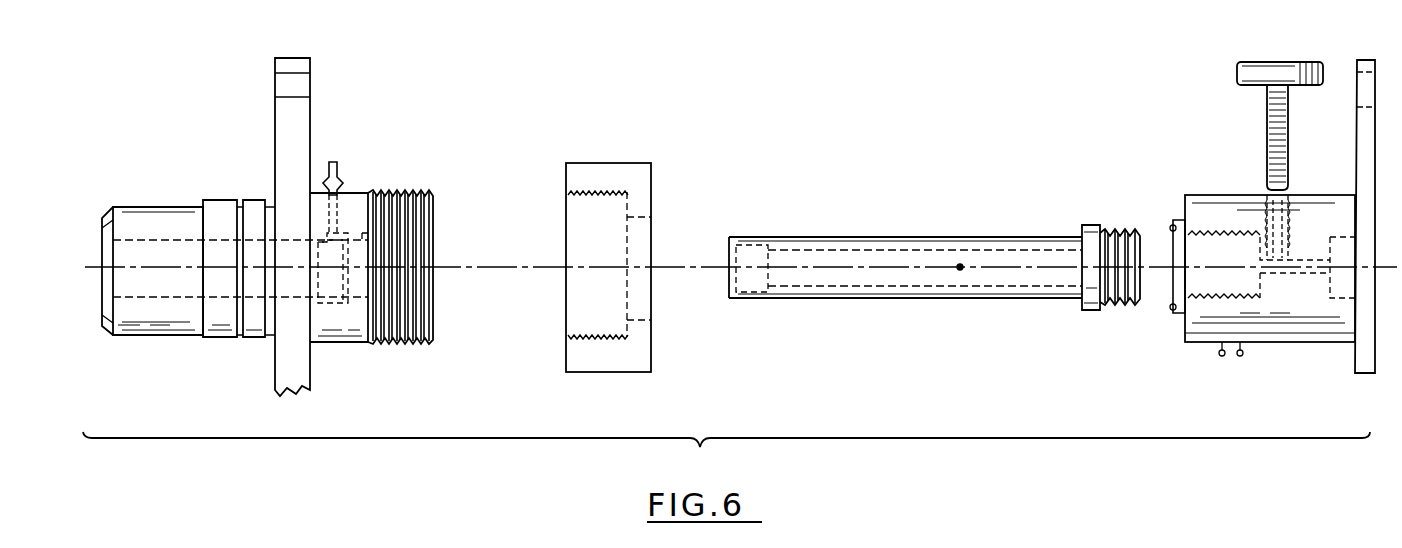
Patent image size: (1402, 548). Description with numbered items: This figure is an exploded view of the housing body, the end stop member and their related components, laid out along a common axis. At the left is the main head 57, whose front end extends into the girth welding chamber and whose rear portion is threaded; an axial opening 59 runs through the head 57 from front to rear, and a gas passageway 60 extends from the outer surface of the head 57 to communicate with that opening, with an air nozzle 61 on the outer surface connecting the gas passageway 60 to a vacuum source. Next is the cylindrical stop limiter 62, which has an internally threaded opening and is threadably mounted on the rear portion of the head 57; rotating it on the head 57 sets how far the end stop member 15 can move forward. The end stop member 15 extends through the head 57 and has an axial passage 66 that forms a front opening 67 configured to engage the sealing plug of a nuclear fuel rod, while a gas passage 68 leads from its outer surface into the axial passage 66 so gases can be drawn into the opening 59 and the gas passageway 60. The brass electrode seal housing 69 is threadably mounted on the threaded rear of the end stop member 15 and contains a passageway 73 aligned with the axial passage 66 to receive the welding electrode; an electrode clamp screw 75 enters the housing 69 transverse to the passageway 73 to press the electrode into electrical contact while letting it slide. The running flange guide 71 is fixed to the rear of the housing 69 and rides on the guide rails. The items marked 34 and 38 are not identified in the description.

The main head 57 is at (150, 213).
The axial opening 59 is at (100, 300).
The gas passageway 60 is at (340, 220).
The air nozzle 61 is at (340, 172).
The stop limiter 62 is at (607, 170).
The end stop member 15 is at (800, 237).
The front opening 67 is at (728, 262).
The gas passage 68 is at (958, 248).
The axial passage 66 is at (1013, 278).
The flange 38 is at (1170, 228).
The electrode seal housing 69 is at (1207, 340).
The passageway 73 is at (1278, 270).
The screw 34 is at (1265, 183).
The electrode clamp screw 75 is at (1247, 72).
The running flange guide 71 is at (1362, 60).